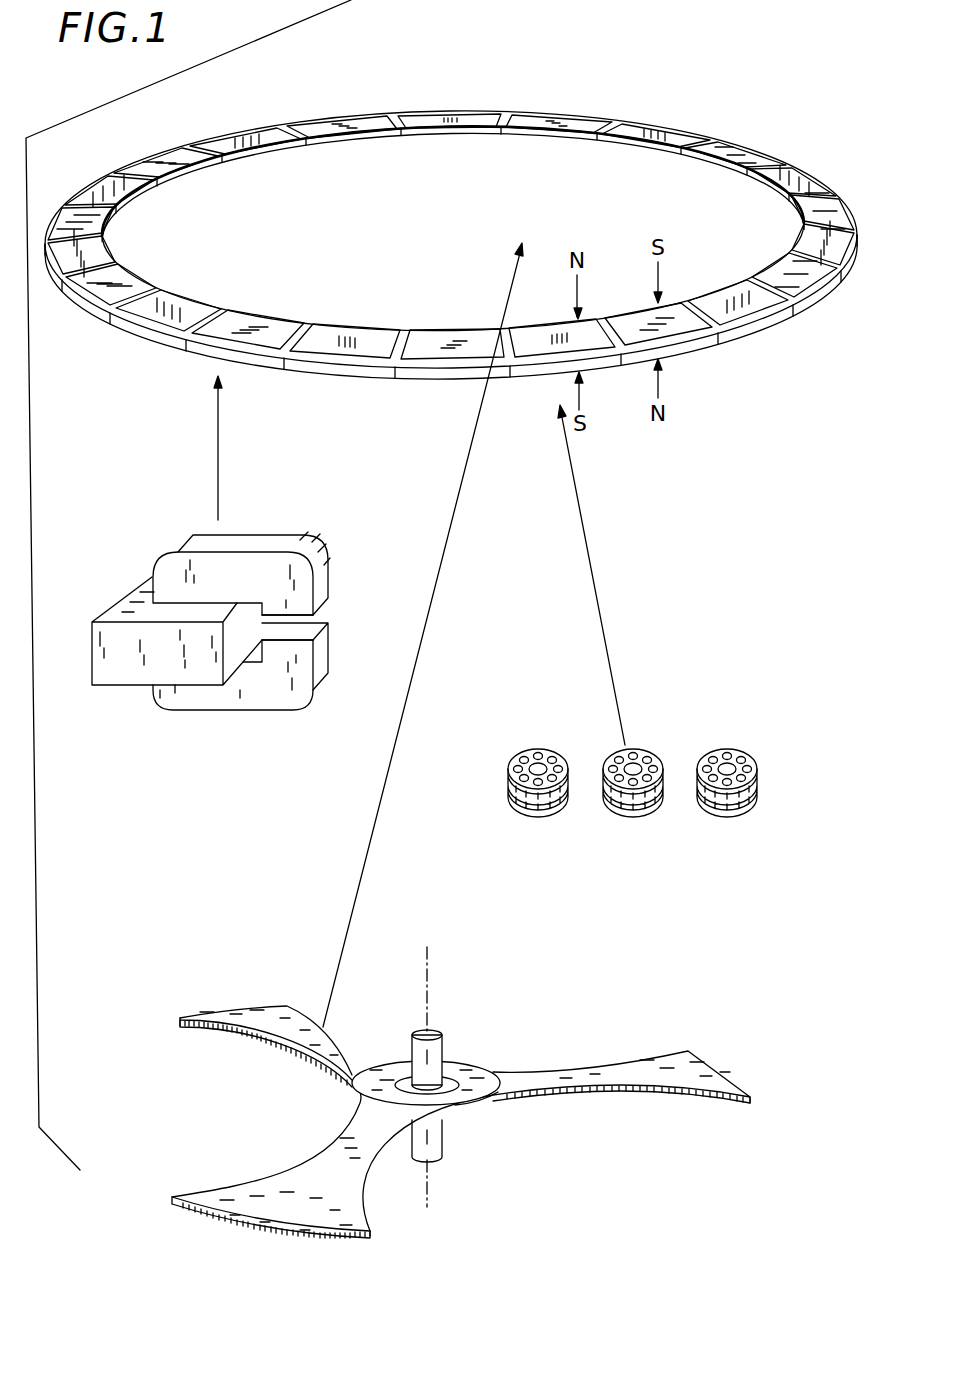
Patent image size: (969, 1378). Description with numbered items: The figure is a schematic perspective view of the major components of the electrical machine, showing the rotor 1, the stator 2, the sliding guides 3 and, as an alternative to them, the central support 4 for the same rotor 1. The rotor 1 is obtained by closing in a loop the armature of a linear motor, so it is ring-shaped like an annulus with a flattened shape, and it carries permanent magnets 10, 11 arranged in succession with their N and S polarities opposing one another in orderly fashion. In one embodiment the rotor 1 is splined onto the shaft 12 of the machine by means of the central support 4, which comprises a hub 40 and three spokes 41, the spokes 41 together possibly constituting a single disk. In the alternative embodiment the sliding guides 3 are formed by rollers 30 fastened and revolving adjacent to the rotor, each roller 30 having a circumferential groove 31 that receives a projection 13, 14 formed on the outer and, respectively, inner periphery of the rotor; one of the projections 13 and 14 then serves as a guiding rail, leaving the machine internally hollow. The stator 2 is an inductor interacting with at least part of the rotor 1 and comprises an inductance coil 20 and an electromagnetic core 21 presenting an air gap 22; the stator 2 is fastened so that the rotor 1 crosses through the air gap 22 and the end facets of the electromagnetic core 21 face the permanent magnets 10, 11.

The rotor 1 is at (610, 116).
The permanent magnet 10 is at (340, 337).
The permanent magnet 11 is at (445, 340).
The shaft 12 is at (427, 987).
The projection 13 is at (822, 300).
The projection 14 is at (760, 277).
The stator 2 is at (318, 530).
The inductance coil 20 is at (128, 665).
The electromagnetic core 21 is at (293, 707).
The air gap 22 is at (327, 618).
The sliding guides 3 is at (664, 820).
The roller 30 is at (508, 768).
The circumferential groove 31 is at (553, 803).
The central support 4 is at (598, 1030).
The hub 40 is at (473, 1067).
The spoke 41 is at (292, 1052).